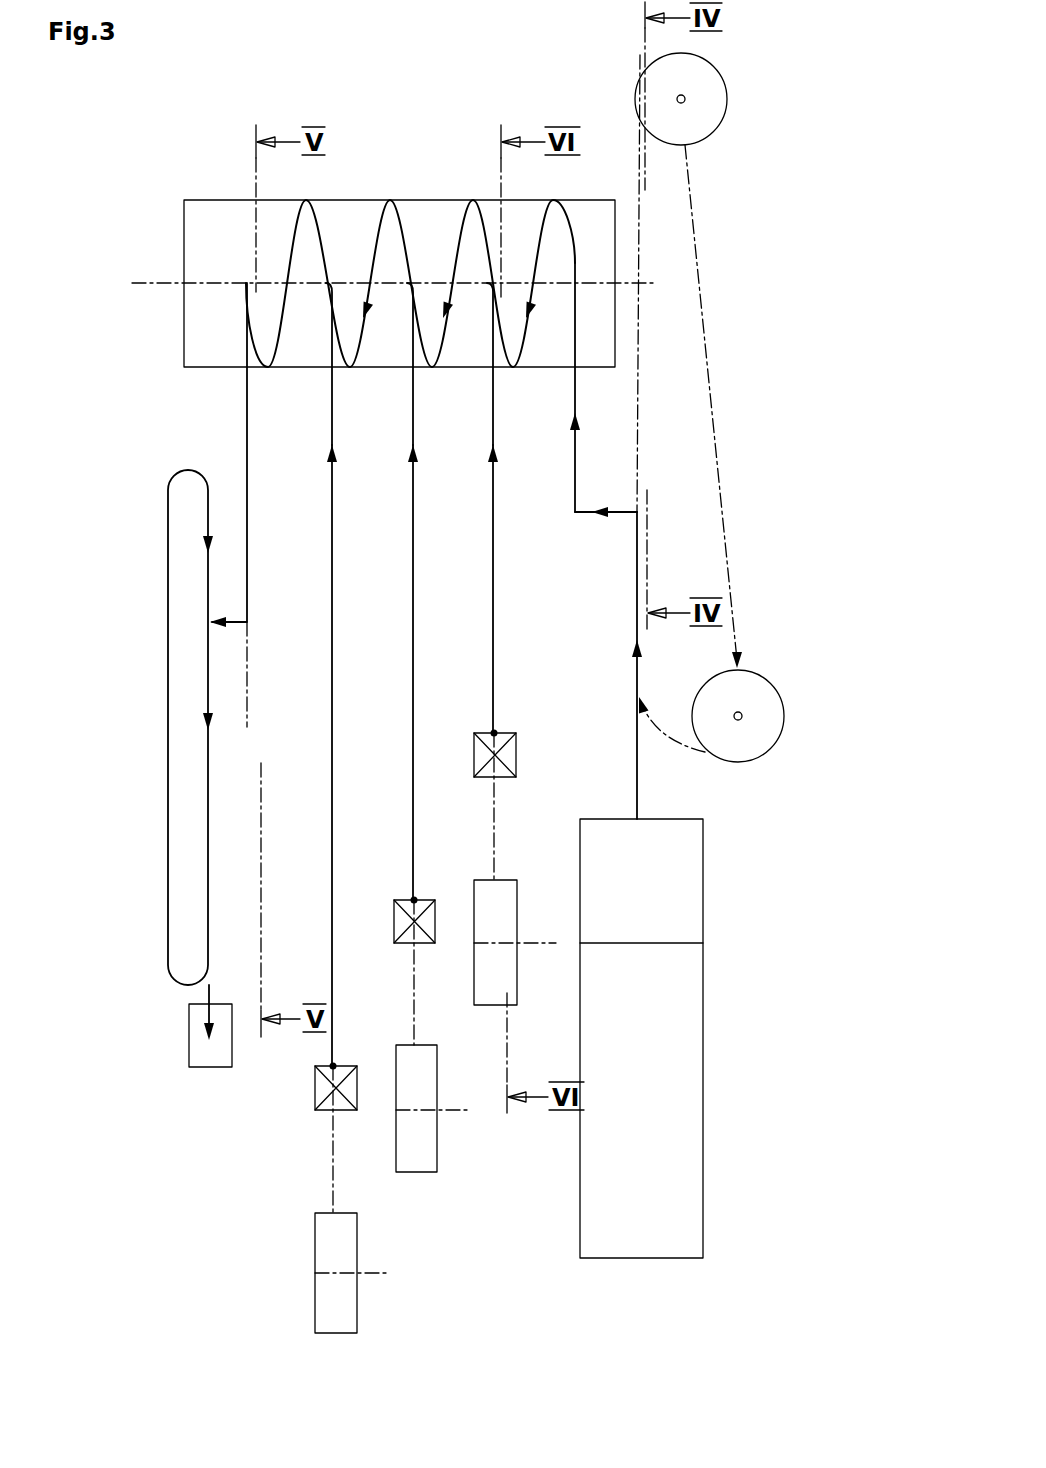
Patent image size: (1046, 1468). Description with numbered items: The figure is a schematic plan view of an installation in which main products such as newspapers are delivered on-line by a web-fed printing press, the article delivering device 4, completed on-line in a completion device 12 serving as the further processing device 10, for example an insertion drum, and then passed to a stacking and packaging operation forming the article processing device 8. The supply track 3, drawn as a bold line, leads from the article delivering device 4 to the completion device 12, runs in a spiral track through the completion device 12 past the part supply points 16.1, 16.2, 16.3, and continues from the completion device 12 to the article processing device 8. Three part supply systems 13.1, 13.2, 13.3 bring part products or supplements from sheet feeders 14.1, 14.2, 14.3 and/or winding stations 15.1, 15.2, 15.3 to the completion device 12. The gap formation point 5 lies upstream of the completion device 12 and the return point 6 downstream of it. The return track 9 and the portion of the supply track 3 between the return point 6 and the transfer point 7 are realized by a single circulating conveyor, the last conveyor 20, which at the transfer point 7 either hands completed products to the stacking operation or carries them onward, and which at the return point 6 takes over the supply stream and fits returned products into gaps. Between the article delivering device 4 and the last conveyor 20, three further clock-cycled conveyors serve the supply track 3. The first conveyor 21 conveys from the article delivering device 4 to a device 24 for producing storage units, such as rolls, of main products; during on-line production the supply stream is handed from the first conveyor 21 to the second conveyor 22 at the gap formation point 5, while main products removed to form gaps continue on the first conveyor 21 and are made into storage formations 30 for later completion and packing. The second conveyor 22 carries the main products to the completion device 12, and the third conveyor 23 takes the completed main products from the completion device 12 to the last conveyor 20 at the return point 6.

The supply track 3 is at (407, 200).
The article delivering device 4 is at (648, 1117).
The gap formation point 5 is at (603, 523).
The return point 6 is at (201, 617).
The transfer point 7 is at (216, 975).
The article processing device 8 is at (195, 1055).
The return track 9 is at (166, 785).
The further processing device 10 is at (452, 135).
The completion device 12 is at (198, 225).
The part supply system 13.1 is at (493, 560).
The part supply system 13.2 is at (413, 633).
The part supply system 13.3 is at (332, 758).
The sheet feeder 14.1 is at (506, 753).
The sheet feeder 14.2 is at (423, 903).
The sheet feeder 14.3 is at (340, 1067).
The winding station 15.1 is at (508, 893).
The winding station 15.2 is at (428, 1143).
The winding station 15.3 is at (343, 1315).
The part supply point 16.1 is at (490, 368).
The part supply point 16.2 is at (409, 368).
The part supply point 16.3 is at (327, 368).
The last conveyor 20 is at (167, 695).
The first conveyor 21 is at (636, 627).
The second conveyor 22 is at (574, 380).
The third conveyor 23 is at (245, 447).
The device for producing storage units 24 is at (742, 95).
The storage formation 30 is at (705, 115).